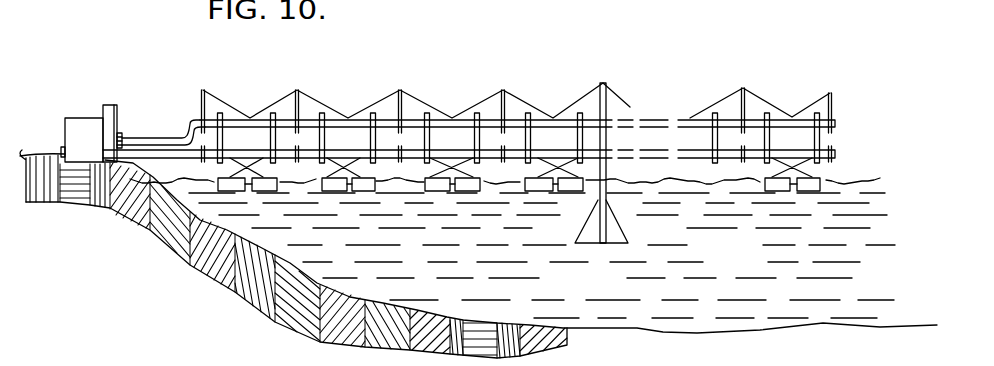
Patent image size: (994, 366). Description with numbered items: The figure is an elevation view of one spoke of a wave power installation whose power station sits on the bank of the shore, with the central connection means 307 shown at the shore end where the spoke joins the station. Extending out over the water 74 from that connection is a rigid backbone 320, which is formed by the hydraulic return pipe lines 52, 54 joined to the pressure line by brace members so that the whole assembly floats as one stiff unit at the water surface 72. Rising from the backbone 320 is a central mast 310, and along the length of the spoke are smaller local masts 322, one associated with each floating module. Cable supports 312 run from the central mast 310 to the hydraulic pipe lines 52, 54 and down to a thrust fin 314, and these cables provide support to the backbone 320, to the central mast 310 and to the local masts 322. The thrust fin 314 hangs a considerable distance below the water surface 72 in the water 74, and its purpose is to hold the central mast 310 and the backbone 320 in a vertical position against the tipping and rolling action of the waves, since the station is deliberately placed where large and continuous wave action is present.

The central connection means 307 is at (108, 105).
The rigid backbone 320 is at (150, 120).
The local masts 322 is at (403, 108).
The cable supports 312 is at (578, 107).
The central mast 310 is at (604, 83).
The hydraulic pipe line 52 is at (652, 115).
The hydraulic pipe line 54 is at (652, 115).
The water surface 72 is at (848, 178).
The water 74 is at (745, 262).
The thrust fin 314 is at (590, 237).